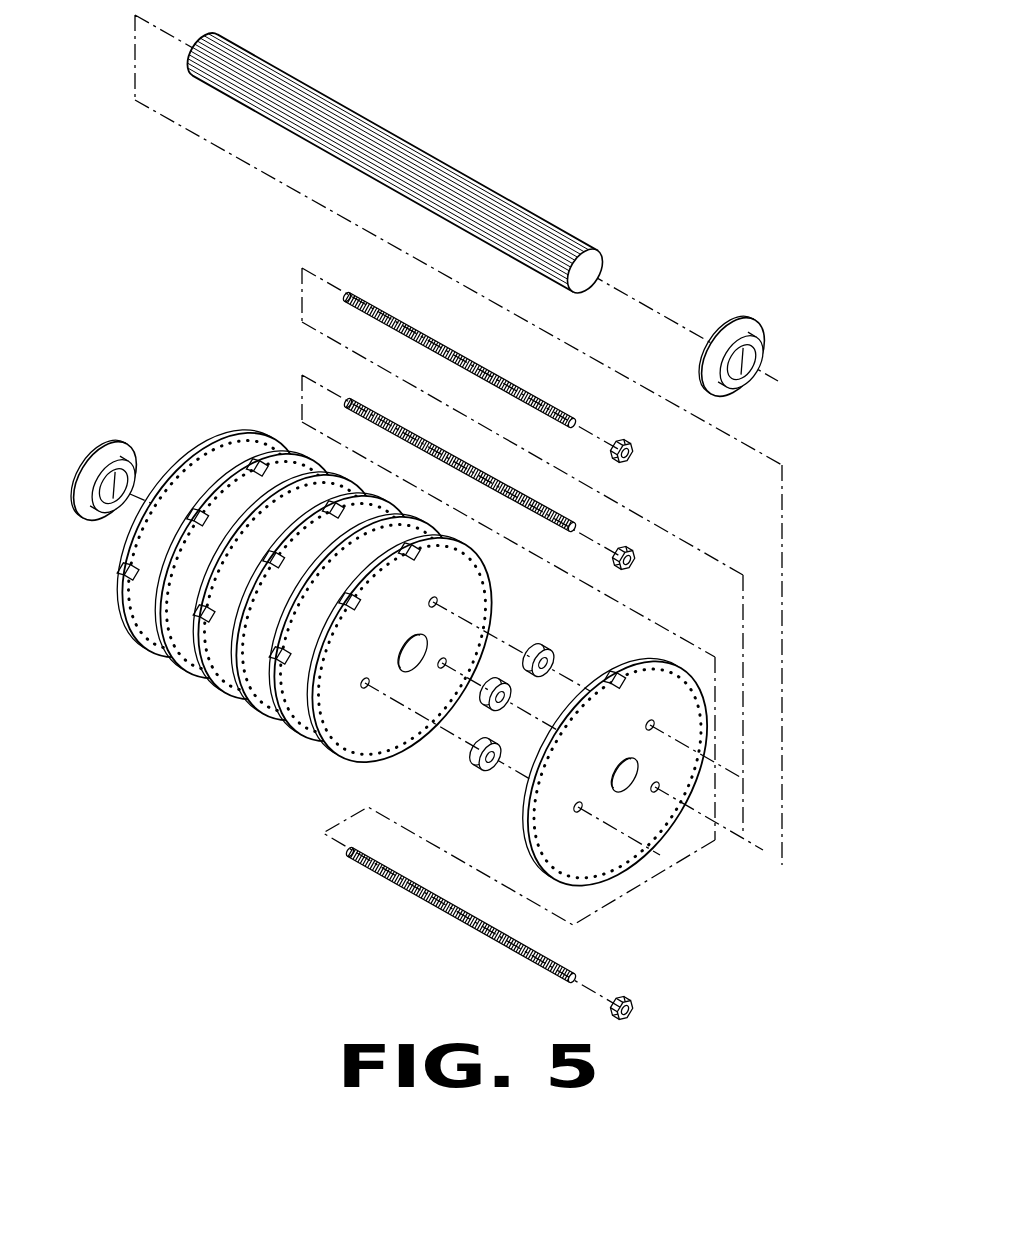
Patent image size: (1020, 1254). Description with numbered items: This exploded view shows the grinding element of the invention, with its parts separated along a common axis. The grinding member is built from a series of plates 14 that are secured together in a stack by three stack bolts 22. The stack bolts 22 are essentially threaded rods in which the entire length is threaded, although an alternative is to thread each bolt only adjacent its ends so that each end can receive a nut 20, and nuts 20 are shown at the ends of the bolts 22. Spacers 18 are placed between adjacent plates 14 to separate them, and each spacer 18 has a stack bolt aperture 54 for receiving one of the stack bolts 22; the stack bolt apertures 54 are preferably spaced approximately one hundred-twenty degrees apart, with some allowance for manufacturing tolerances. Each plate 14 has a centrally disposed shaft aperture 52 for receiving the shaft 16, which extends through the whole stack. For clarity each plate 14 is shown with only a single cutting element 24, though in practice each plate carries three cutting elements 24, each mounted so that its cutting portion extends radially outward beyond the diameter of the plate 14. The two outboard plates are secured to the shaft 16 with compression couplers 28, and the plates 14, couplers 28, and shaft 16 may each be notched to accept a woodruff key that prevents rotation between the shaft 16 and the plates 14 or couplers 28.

The plates 14 is at (212, 445).
The shaft 16 is at (395, 140).
The spacers 18 is at (483, 763).
The nut 20 is at (640, 452).
The stack bolts 22 is at (403, 322).
The cutting elements 24 is at (278, 657).
The couplers 28 is at (741, 325).
The shaft aperture 52 is at (626, 792).
The stack bolt aperture 54 is at (442, 667).